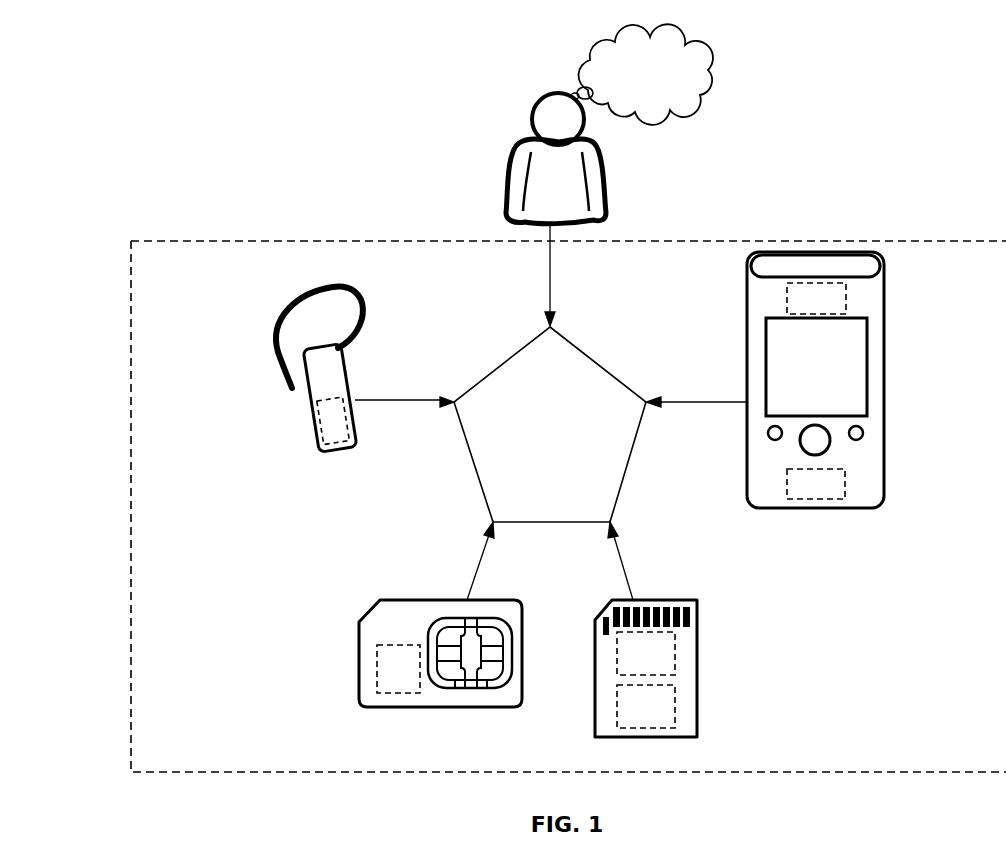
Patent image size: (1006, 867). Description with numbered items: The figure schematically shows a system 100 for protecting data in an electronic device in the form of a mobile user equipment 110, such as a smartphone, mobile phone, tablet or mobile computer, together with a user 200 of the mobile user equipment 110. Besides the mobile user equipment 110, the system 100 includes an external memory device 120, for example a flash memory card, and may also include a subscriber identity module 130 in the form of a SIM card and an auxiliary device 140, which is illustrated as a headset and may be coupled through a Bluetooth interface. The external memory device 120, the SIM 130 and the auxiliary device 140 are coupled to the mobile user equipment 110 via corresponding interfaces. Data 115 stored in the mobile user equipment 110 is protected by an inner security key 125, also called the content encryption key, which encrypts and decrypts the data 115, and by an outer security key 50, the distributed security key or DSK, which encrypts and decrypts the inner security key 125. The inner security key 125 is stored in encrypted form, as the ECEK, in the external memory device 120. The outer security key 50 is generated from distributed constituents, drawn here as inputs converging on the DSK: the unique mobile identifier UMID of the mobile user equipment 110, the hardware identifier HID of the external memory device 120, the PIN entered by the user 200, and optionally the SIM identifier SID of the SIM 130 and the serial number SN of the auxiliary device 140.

The system 100 is at (216, 241).
The user 200 is at (503, 188).
The outer security key 50 is at (505, 358).
The mobile user equipment 110 is at (884, 478).
The data 115 is at (846, 298).
The external memory device 120 is at (697, 705).
The inner security key 125 is at (675, 692).
The subscriber identity module 130 is at (357, 655).
The auxiliary device 140 is at (310, 413).